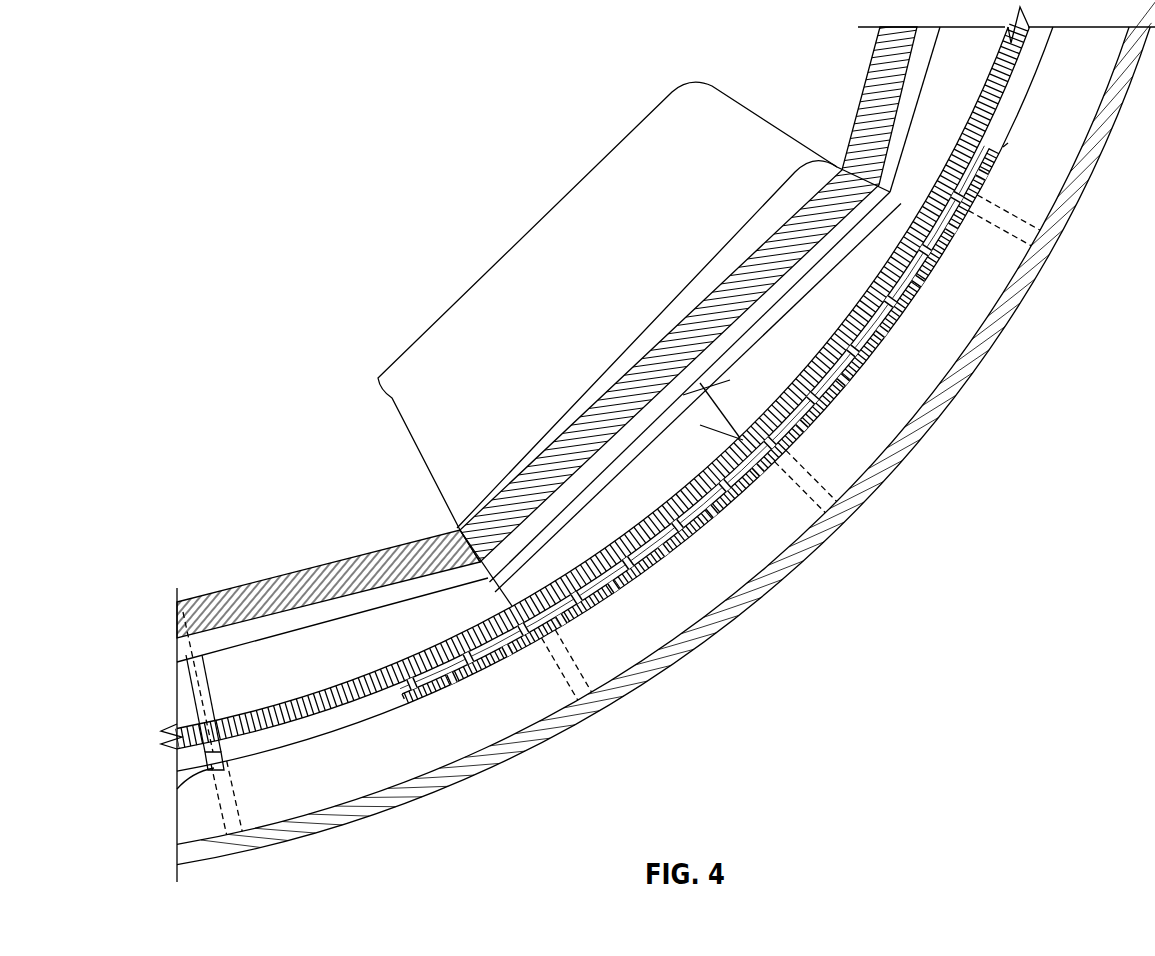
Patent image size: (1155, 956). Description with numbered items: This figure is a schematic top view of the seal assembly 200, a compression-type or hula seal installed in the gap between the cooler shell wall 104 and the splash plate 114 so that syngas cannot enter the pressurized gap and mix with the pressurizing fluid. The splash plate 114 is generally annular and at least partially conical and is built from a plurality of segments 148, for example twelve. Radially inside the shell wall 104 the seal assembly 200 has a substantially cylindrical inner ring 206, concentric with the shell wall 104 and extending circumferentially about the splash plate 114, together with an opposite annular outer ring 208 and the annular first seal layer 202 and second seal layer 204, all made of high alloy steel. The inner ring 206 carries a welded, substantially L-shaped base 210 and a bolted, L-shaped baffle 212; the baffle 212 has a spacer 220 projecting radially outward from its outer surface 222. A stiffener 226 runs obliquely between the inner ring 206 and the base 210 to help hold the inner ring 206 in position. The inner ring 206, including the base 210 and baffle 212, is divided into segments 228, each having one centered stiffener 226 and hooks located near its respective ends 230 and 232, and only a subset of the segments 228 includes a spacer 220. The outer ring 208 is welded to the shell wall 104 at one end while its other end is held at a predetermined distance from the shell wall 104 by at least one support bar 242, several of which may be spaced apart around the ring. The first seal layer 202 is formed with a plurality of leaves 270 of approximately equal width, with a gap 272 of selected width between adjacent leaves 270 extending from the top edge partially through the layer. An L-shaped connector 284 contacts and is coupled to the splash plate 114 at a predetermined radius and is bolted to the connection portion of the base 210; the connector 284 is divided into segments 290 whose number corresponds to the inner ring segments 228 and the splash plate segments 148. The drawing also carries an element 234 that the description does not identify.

The seal assembly 200 is at (286, 92).
The shell wall 104 is at (900, 453).
The splash plate 114 is at (337, 560).
The segments 148 is at (601, 367).
The first seal layer 202 is at (1010, 138).
The second seal layer 204 is at (972, 165).
The inner ring 206 is at (815, 380).
The outer ring 208 is at (933, 388).
The base 210 is at (340, 672).
The baffle 212 is at (187, 760).
The spacer 220 is at (177, 789).
The outer surface 222 is at (328, 734).
The stiffener 226 is at (712, 400).
The segments 228 is at (546, 212).
The end 230 is at (497, 597).
The end 232 is at (907, 203).
The fastener 234 is at (185, 642).
The support bar 242 is at (228, 816).
The leaves 270 is at (600, 603).
The gap 272 is at (676, 547).
The connector 284 is at (437, 582).
The segments 290 is at (710, 415).